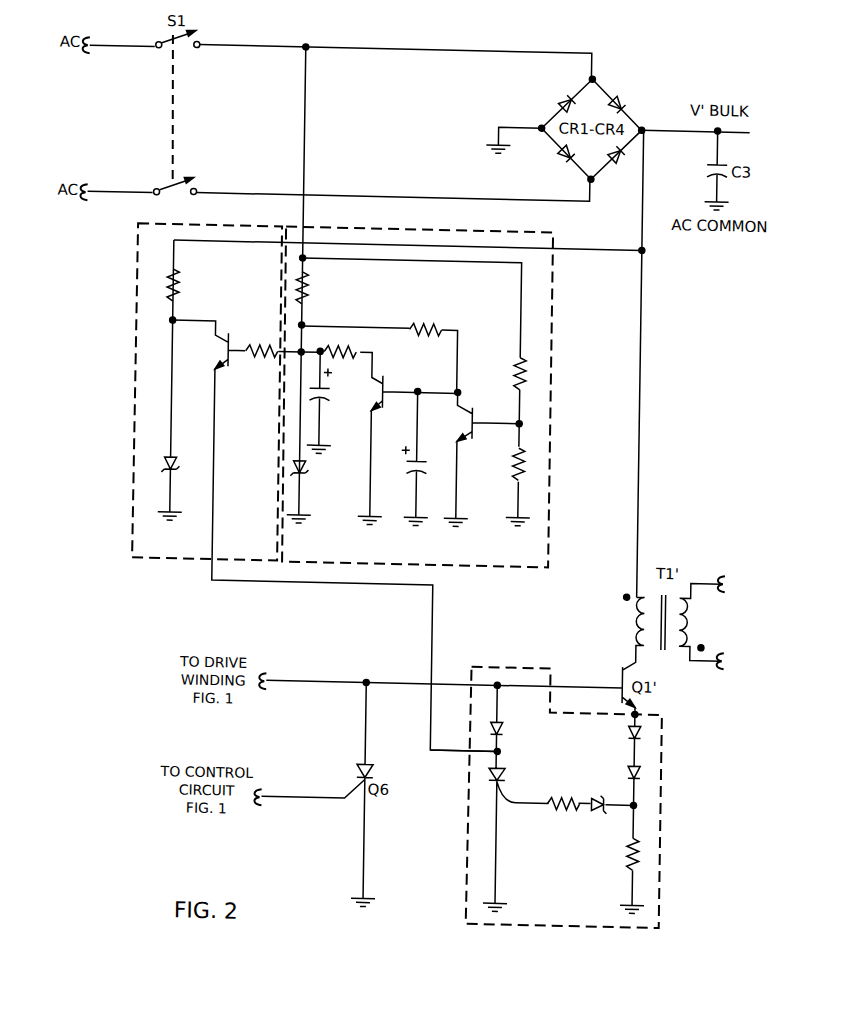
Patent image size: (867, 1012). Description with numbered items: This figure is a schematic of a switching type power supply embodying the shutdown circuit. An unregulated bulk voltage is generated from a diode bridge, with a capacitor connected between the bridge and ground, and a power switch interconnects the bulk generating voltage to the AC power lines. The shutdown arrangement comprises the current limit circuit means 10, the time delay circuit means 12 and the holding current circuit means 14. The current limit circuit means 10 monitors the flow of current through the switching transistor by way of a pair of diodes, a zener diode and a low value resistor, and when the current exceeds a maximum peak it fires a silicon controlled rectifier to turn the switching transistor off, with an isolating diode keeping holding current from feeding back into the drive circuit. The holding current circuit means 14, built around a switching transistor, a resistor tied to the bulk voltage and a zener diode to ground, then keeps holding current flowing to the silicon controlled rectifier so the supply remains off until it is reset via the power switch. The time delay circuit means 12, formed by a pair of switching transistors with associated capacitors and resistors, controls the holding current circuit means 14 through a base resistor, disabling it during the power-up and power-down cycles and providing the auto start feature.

The current limit circuit means 10 is at (680, 815).
The time delay circuit means 12 is at (463, 568).
The holding current circuit means 14 is at (185, 572).